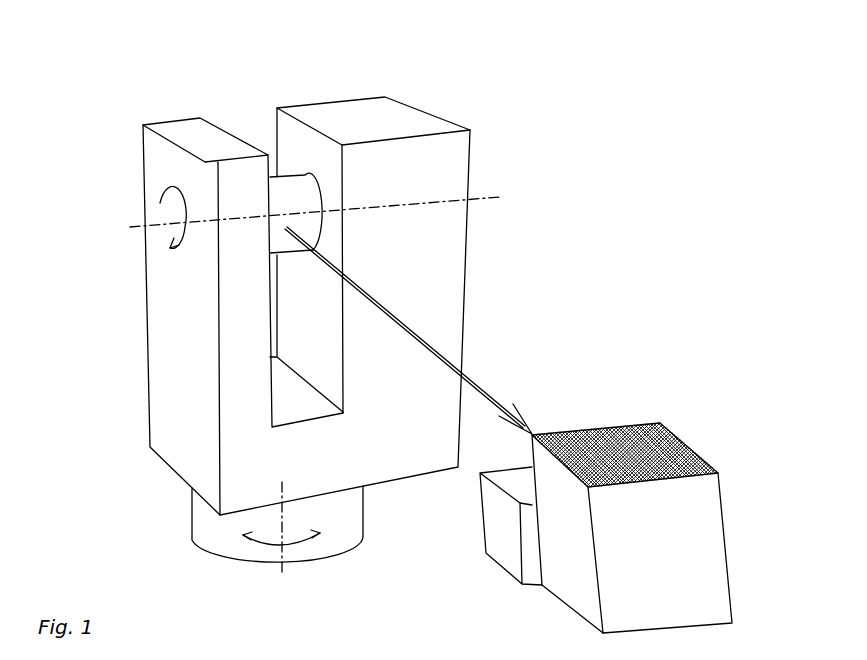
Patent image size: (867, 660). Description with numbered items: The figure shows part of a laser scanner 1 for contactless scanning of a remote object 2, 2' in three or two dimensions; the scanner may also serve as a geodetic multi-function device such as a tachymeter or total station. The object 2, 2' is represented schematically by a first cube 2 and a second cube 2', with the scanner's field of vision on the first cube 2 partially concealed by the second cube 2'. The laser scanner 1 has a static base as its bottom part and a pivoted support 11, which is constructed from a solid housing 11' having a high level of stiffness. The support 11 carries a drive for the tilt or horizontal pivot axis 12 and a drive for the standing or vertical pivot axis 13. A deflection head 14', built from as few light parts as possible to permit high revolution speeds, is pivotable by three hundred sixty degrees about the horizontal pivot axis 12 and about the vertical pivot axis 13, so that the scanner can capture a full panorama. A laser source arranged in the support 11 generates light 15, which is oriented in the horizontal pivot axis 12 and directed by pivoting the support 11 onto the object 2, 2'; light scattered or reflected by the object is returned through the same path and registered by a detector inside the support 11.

The laser scanner 1 is at (368, 338).
The first cube 2 is at (660, 519).
The second cube 2' is at (478, 539).
The support 11 is at (413, 306).
The housing 11' is at (243, 316).
The horizontal pivot axis 12 is at (485, 196).
The vertical pivot axis 13 is at (283, 567).
The deflection head 14' is at (281, 149).
The light 15 is at (481, 391).